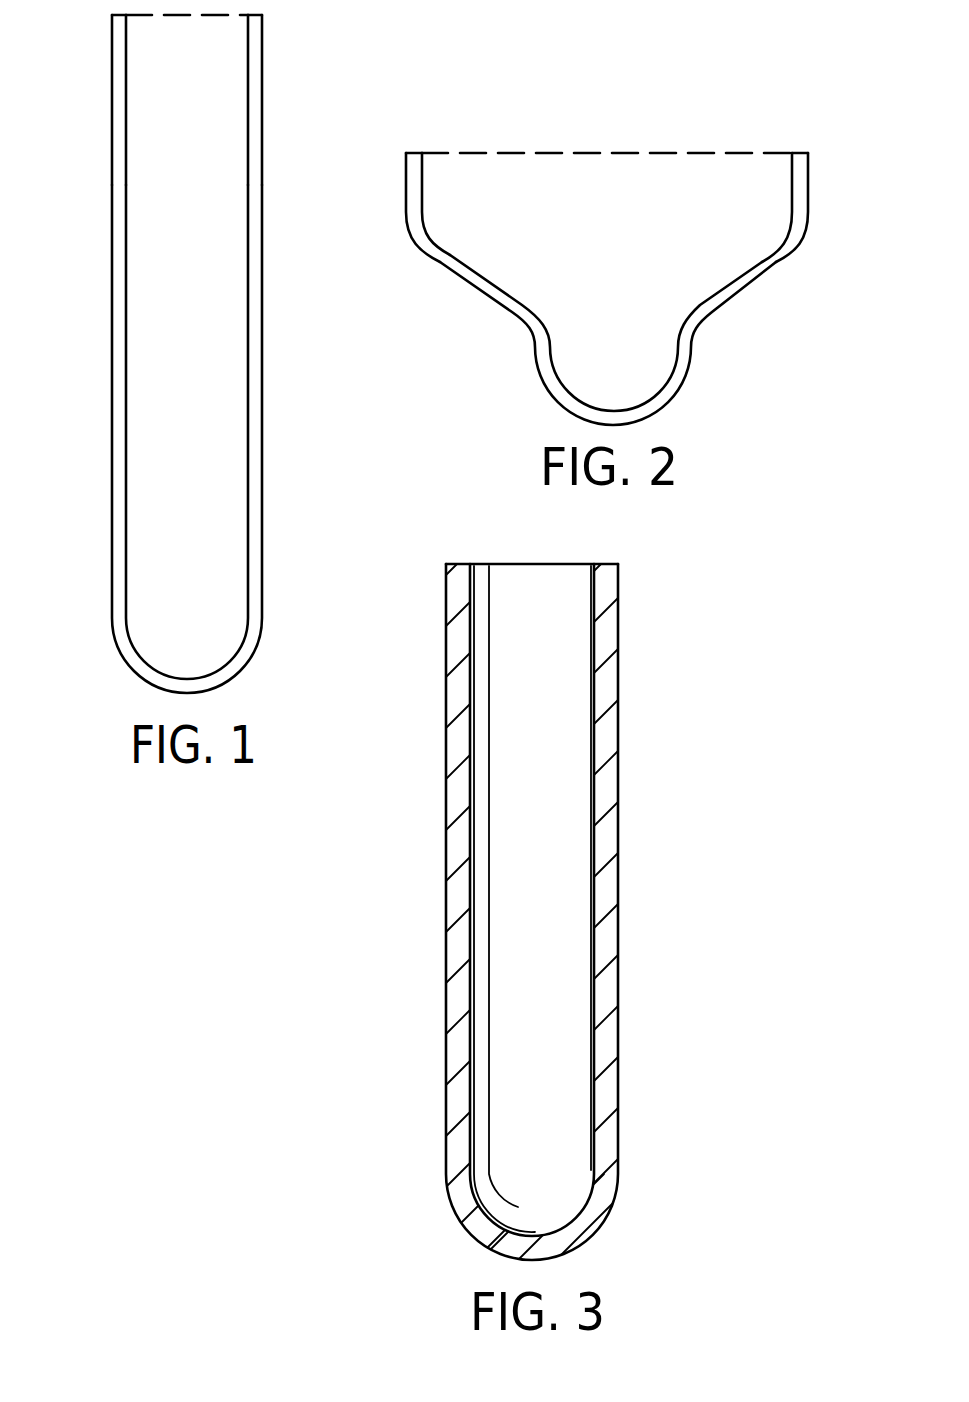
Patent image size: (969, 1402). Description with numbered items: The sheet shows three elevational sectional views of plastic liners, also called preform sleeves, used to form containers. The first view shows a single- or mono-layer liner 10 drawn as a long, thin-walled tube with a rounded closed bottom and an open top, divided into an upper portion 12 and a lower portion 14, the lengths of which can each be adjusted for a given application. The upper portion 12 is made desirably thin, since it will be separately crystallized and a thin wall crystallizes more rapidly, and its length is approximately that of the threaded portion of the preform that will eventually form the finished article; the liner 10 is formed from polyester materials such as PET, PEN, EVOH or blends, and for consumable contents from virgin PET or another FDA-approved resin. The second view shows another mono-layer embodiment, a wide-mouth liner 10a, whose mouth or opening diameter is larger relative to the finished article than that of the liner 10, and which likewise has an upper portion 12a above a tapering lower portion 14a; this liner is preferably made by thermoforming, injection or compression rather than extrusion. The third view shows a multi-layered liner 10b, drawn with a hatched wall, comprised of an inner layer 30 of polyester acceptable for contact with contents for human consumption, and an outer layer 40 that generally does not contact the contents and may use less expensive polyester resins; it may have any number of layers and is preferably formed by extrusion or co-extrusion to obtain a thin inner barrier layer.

In FIG. 1, the liner 10 is at (290, 104).
In FIG. 1, the upper portion 12 is at (95, 22).
In FIG. 1, the lower portion 14 is at (103, 188).
In FIG. 2, the wide-mouth liner 10a is at (835, 214).
In FIG. 2, the upper portion 12a is at (403, 153).
In FIG. 2, the lower portion 14a is at (403, 258).
In FIG. 3, the multi-layered liner 10b is at (418, 858).
In FIG. 3, the inner layer 30 is at (595, 782).
In FIG. 3, the outer layer 40 is at (608, 818).